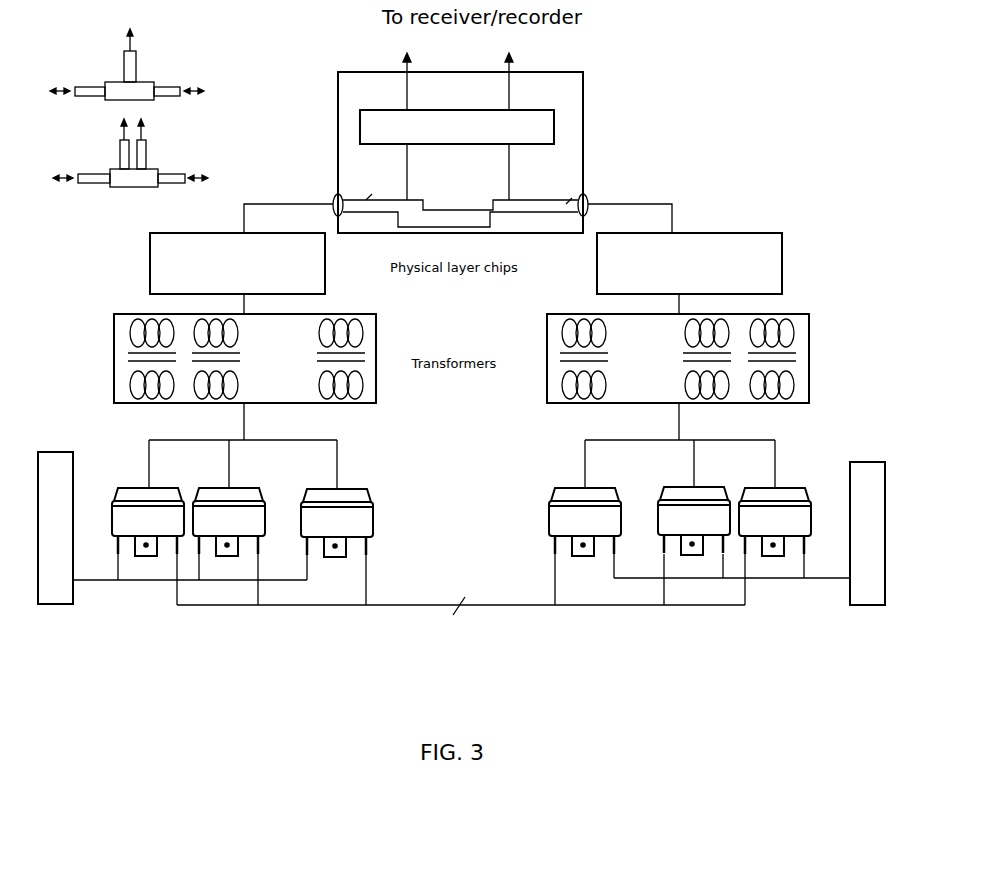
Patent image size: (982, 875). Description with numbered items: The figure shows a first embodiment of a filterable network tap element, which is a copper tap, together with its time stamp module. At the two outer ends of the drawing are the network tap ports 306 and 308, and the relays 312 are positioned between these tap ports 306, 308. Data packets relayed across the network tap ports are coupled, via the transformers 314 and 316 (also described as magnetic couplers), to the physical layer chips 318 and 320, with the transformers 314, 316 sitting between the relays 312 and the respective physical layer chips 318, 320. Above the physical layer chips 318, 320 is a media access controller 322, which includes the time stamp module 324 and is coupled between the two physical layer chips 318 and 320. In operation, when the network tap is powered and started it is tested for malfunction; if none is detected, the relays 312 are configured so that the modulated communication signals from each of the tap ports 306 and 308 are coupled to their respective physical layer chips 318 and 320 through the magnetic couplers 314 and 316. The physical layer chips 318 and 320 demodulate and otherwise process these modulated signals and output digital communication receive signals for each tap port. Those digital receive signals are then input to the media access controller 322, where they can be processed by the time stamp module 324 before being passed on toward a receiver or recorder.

The network tap port 306 is at (57, 608).
The network tap port 308 is at (863, 609).
The relays 312 is at (437, 555).
The transformers 314 is at (90, 361).
The transformers 316 is at (868, 361).
The physical layer chip 318 is at (140, 272).
The physical layer chip 320 is at (837, 272).
The media access controller (MAC) 322 is at (641, 108).
The time stamp module 324 is at (452, 137).